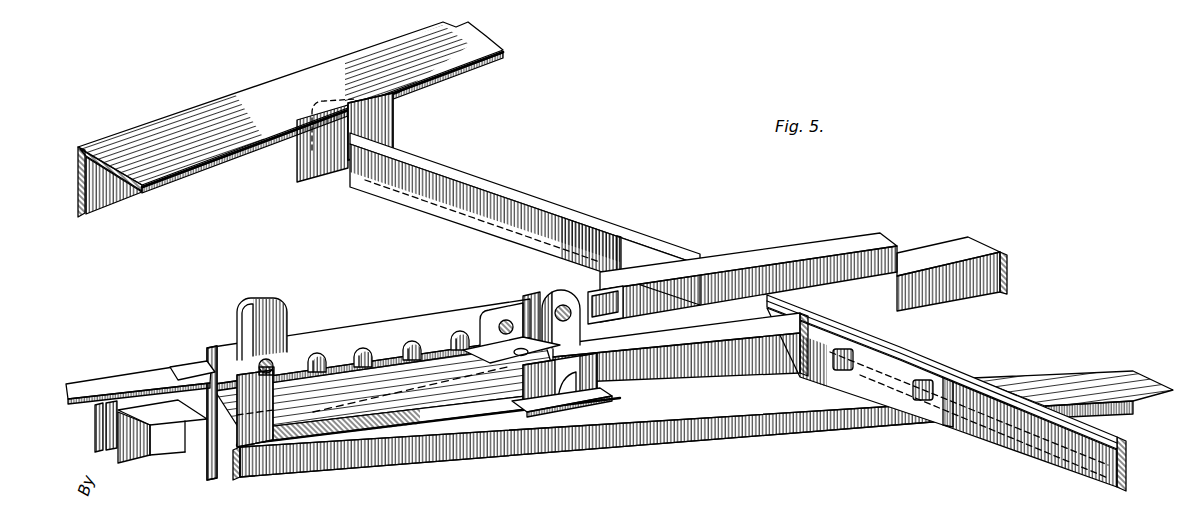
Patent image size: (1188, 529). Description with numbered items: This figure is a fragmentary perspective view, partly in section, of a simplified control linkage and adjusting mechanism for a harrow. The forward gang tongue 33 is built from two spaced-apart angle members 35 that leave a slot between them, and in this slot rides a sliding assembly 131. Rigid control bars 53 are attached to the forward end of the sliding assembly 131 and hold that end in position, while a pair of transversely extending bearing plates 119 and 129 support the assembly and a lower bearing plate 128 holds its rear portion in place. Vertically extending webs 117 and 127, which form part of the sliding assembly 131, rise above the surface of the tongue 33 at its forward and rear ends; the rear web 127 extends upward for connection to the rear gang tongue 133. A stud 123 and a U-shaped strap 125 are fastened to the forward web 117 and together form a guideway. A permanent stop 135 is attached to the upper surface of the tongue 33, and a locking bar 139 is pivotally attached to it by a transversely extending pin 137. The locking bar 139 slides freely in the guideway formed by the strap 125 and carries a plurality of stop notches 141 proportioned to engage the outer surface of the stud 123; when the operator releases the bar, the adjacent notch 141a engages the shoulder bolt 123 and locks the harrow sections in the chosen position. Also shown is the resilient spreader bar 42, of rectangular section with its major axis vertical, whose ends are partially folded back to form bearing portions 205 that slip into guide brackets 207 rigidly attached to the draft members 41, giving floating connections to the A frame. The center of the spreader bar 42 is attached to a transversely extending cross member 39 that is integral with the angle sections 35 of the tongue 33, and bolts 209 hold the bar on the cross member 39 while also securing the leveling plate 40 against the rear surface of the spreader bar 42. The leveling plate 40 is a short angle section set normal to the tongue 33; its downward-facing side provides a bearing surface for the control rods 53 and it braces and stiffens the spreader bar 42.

The tongue 33 is at (100, 387).
The angle members 35 is at (120, 380).
The cross member 39 is at (933, 421).
The leveling plate 40 is at (903, 345).
The draft members 41 is at (207, 160).
The spreader bar 42 is at (438, 207).
The control bars 53 is at (779, 432).
The forward upstanding web 117 is at (238, 446).
The bearing plate 119 is at (178, 366).
The stud 123 is at (273, 360).
The U-shaped strap 125 is at (268, 300).
The rear web 127 is at (540, 300).
The lower bearing plate 128 is at (566, 402).
The bearing plate 129 is at (608, 350).
The sliding assembly 131 is at (418, 404).
The rear gang tongue 133 is at (803, 253).
The permanent stop 135 is at (530, 368).
The pin 137 is at (505, 320).
The locking bar 139 is at (403, 330).
The stop notches 141 is at (318, 358).
The stop notch 141a is at (218, 346).
The bearing portions 205 is at (334, 100).
The guide brackets 207 is at (385, 128).
The bolts 209 is at (836, 368).